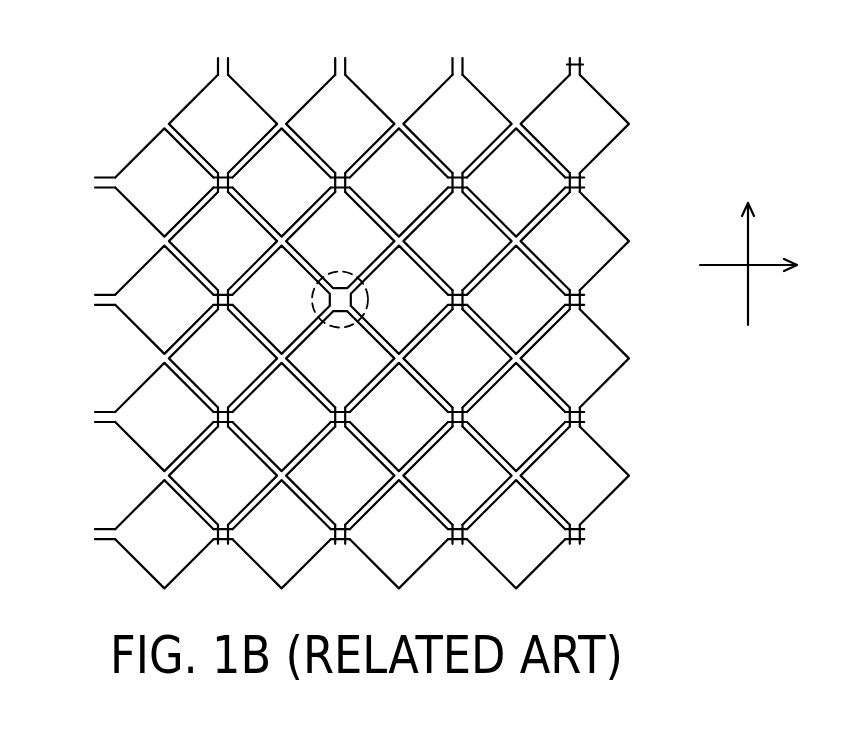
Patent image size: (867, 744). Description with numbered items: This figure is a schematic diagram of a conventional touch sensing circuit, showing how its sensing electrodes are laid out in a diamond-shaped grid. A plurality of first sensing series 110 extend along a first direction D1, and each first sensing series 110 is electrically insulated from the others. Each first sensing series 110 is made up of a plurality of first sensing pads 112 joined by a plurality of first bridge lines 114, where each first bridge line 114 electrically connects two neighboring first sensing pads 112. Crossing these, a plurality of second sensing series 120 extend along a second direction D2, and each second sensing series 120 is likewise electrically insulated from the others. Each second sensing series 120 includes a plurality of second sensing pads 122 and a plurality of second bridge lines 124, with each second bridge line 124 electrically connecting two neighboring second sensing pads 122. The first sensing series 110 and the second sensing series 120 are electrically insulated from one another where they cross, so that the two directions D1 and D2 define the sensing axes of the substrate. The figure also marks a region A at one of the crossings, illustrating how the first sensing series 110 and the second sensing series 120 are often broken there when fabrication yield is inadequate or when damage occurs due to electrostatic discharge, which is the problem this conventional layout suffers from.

The first sensing series 110 is at (421, 274).
The first sensing pad 112 is at (592, 138).
The first bridge line 114 is at (573, 63).
The second sensing series 120 is at (300, 380).
The second sensing pad 122 is at (183, 550).
The second bridge line 124 is at (108, 529).
The region A is at (363, 293).
The first direction D1 is at (747, 245).
The second direction D2 is at (765, 267).